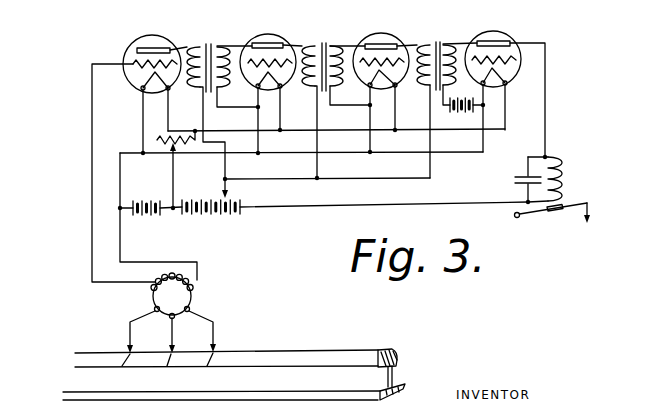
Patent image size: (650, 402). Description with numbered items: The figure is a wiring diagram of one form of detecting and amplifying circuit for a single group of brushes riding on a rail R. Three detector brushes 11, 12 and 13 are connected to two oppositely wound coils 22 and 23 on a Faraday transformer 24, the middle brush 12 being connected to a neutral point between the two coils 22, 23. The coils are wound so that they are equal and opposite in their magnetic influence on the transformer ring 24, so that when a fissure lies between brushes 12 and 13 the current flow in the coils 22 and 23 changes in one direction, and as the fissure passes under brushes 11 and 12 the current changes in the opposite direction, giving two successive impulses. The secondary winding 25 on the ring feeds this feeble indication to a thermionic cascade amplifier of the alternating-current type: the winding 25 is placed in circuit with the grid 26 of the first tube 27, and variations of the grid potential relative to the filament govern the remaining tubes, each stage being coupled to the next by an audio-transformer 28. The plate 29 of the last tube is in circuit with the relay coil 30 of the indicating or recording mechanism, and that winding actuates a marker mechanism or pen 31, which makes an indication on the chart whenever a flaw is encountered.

The detector brush 11 is at (113, 373).
The detector brush 12 is at (162, 373).
The detector brush 13 is at (208, 372).
The coil 22 is at (145, 332).
The coil 23 is at (199, 331).
The Faraday transformer 24 is at (151, 294).
The secondary winding 25 is at (169, 273).
The grid 26 is at (141, 65).
The No. 1 tube 27 is at (161, 34).
The audio-transformer 28 is at (323, 96).
The plate 29 is at (500, 43).
The relay coil 30 is at (565, 181).
The pen 31 is at (553, 225).
The rail R is at (234, 363).